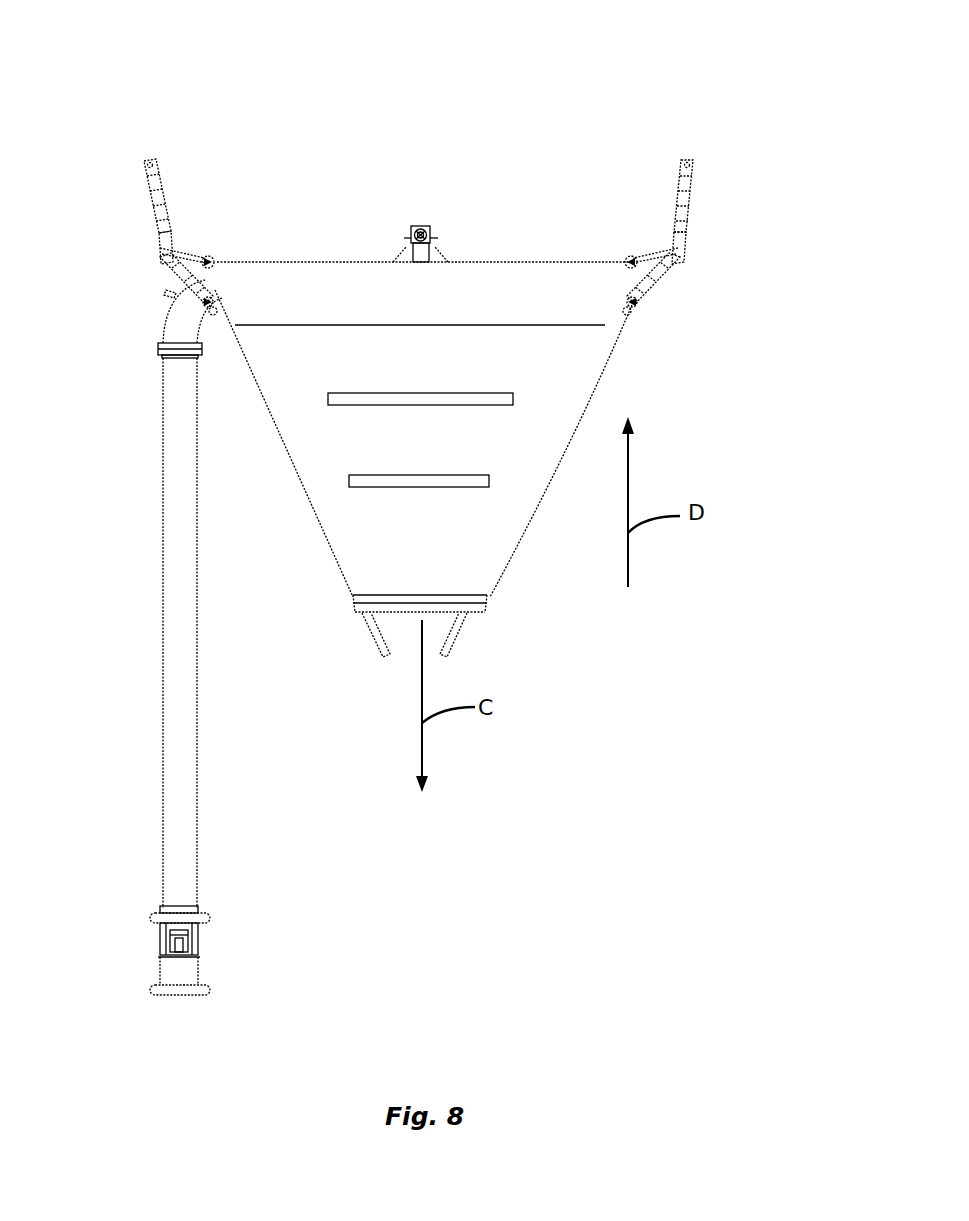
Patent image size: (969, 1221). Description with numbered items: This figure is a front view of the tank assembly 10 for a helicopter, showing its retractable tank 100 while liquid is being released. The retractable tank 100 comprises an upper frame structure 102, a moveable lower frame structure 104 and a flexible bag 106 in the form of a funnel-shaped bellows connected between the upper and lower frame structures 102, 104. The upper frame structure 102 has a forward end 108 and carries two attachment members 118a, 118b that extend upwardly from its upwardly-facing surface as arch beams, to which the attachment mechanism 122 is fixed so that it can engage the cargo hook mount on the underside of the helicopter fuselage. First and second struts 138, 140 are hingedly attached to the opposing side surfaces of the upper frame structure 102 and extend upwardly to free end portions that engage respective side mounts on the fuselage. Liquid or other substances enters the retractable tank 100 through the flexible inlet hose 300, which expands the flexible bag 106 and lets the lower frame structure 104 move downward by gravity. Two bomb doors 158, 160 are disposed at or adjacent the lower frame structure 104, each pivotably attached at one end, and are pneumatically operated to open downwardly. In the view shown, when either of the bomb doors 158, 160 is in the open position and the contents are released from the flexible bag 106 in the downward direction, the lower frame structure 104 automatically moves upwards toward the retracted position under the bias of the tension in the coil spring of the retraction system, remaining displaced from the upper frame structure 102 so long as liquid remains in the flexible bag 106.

The tank assembly 10 is at (137, 57).
The retractable tank 100 is at (462, 417).
The upper frame structure 102 is at (463, 309).
The lower frame structure 104 is at (481, 600).
The flexible bag 106 is at (505, 547).
The forward end 108 is at (443, 310).
The attachment member 118a is at (405, 246).
The attachment member 118b is at (437, 246).
The attachment mechanism 122 is at (425, 220).
The first strut 138 is at (160, 222).
The second strut 140 is at (688, 228).
The bomb door 158 is at (385, 648).
The bomb door 160 is at (455, 648).
The flexible inlet hose 300 is at (172, 717).